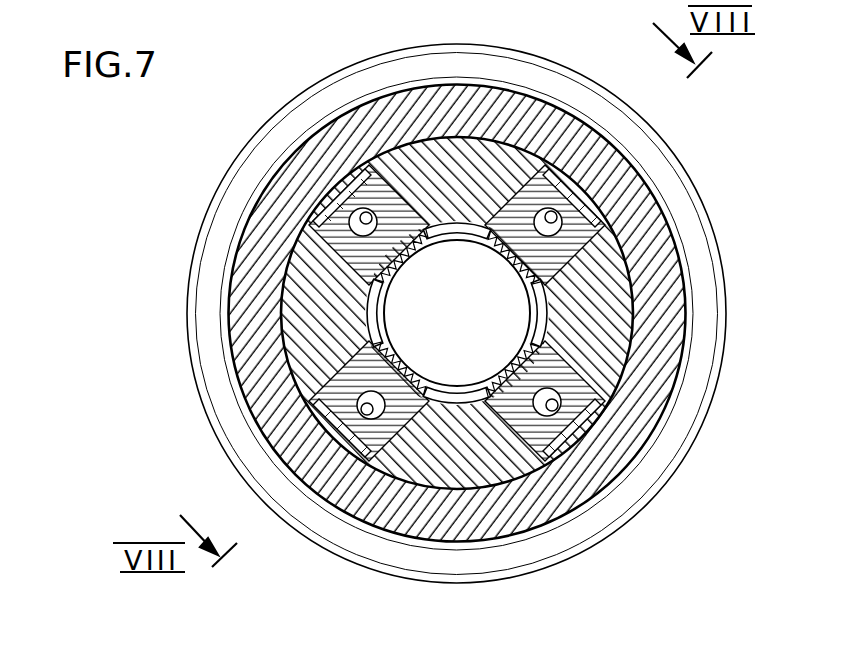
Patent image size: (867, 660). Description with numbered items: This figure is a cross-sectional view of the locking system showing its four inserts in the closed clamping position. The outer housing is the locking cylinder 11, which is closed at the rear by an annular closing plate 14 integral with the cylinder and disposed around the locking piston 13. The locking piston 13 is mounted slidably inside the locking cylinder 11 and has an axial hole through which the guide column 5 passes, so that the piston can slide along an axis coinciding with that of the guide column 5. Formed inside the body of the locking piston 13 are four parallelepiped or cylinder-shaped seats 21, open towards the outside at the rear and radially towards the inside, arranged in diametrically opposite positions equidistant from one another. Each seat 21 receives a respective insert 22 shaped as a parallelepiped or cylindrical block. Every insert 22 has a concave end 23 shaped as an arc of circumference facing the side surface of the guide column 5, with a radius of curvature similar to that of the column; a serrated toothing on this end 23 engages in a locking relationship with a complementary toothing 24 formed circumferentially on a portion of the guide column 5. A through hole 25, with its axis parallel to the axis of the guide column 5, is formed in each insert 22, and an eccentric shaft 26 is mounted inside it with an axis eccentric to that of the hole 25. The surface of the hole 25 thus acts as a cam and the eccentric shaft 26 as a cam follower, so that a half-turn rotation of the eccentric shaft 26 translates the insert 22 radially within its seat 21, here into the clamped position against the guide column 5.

The locking cylinder 11 is at (298, 110).
The annular closing plate 14 is at (303, 168).
The locking piston 13 is at (297, 300).
The guide column 5 is at (457, 313).
The seat 21 is at (565, 193).
The insert 22 is at (432, 237).
The concave end 23 is at (430, 367).
The complementary toothing 24 is at (560, 312).
The through hole 25 is at (365, 462).
The eccentric shaft 26 is at (357, 400).